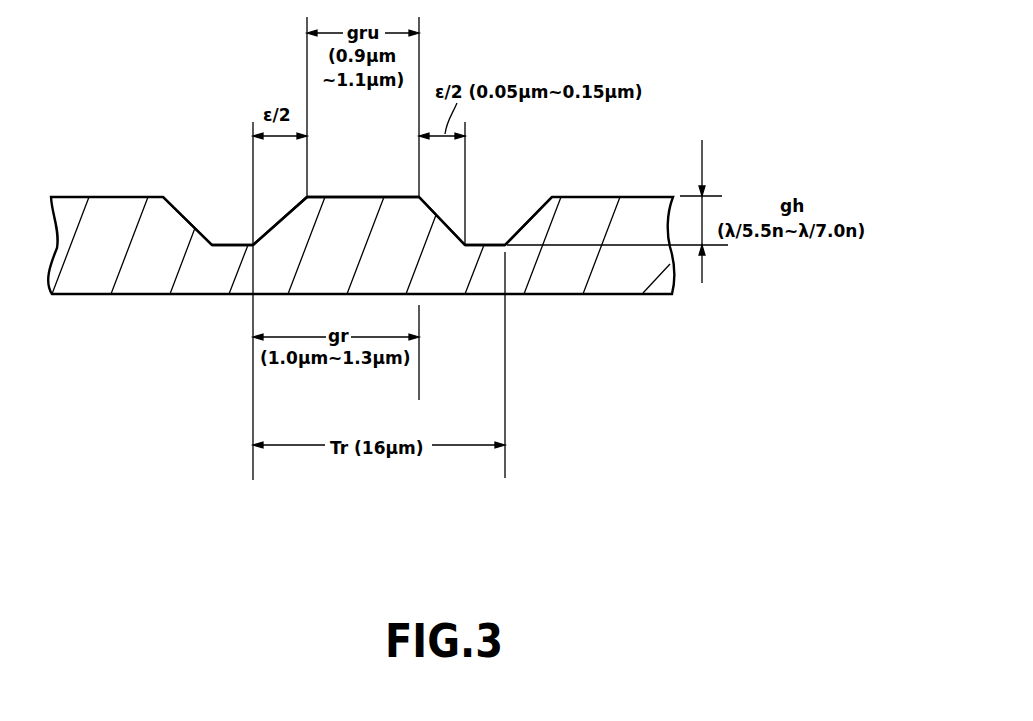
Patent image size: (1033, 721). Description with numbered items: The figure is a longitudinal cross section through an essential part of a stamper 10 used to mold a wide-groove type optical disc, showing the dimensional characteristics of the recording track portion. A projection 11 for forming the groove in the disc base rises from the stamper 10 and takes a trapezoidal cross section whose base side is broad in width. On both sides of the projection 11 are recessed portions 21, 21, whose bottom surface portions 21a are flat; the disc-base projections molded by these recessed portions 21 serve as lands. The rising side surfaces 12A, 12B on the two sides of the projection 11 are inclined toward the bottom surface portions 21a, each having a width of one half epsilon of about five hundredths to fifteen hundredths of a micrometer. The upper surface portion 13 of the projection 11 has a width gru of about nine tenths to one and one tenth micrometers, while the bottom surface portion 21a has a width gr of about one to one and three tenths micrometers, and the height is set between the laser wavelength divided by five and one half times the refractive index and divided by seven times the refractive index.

The stamper 10 is at (38, 266).
The projection for forming groove 11 is at (305, 236).
The rising side surface 12A is at (281, 219).
The rising side surface 12B is at (442, 215).
The upper surface portion 13 is at (343, 196).
The recessed portion 21 is at (238, 245).
The bottom surface portion 21a is at (214, 243).